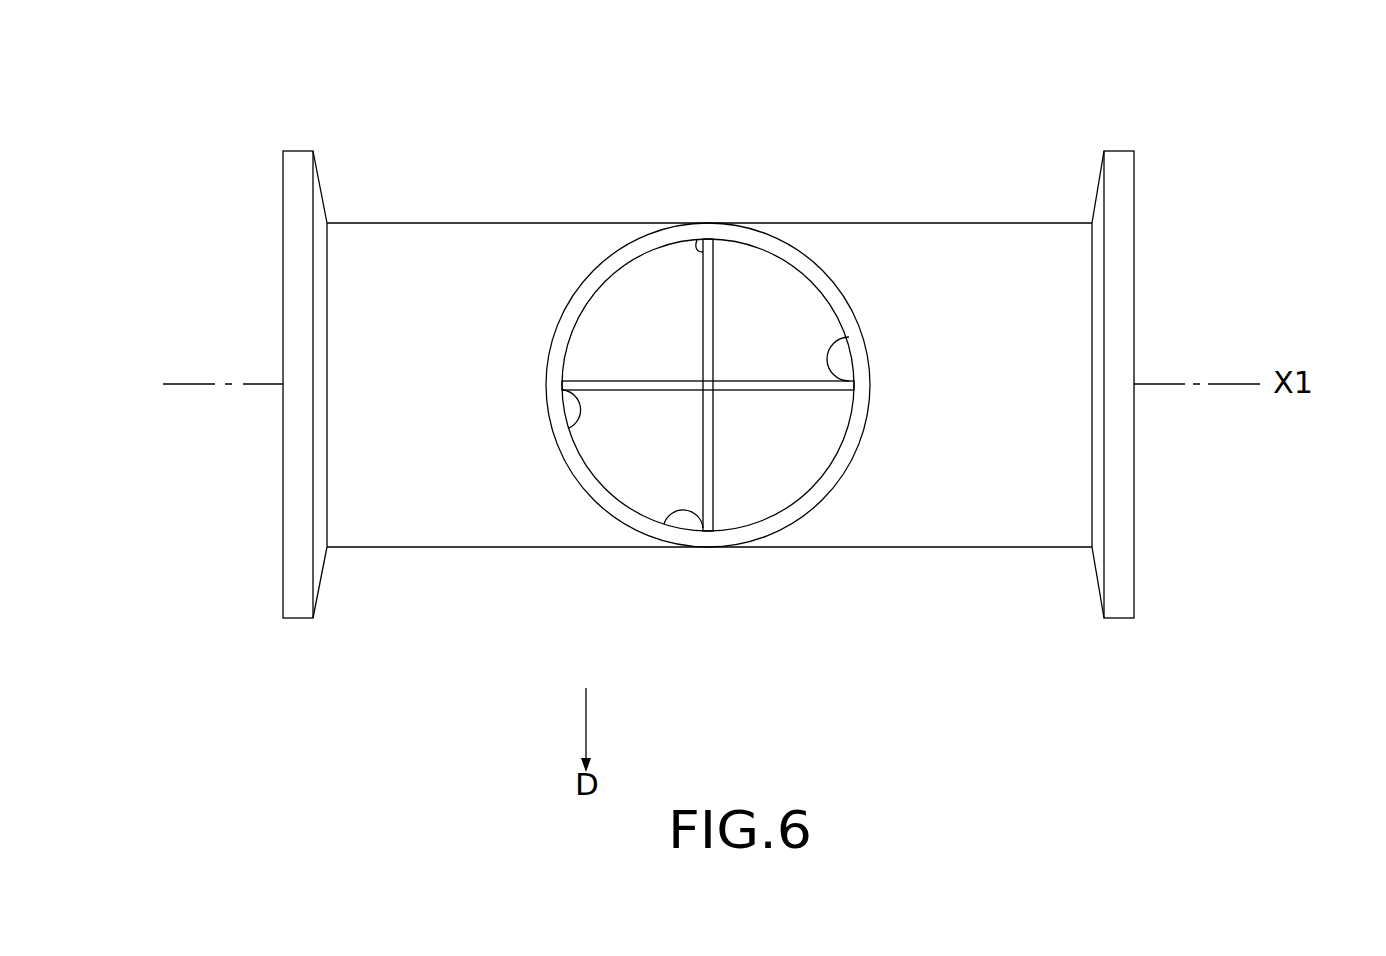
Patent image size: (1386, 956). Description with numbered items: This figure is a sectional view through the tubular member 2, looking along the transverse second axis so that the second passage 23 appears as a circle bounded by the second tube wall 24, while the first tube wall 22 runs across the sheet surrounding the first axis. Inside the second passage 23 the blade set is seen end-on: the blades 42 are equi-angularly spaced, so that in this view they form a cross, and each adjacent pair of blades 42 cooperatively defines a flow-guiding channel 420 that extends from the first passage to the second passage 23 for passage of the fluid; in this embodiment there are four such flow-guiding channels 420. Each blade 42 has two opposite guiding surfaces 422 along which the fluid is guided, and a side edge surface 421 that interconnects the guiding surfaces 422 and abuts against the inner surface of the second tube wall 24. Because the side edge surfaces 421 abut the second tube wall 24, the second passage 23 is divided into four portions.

The tubular member 2 is at (1120, 146).
The first tube wall 22 is at (1025, 495).
The second passage 23 is at (840, 452).
The second tube wall 24 is at (826, 276).
The blade 42 is at (631, 403).
The flow-guiding channel 420 is at (610, 322).
The side edge surface 421 is at (697, 243).
The guiding surface 422 is at (703, 283).